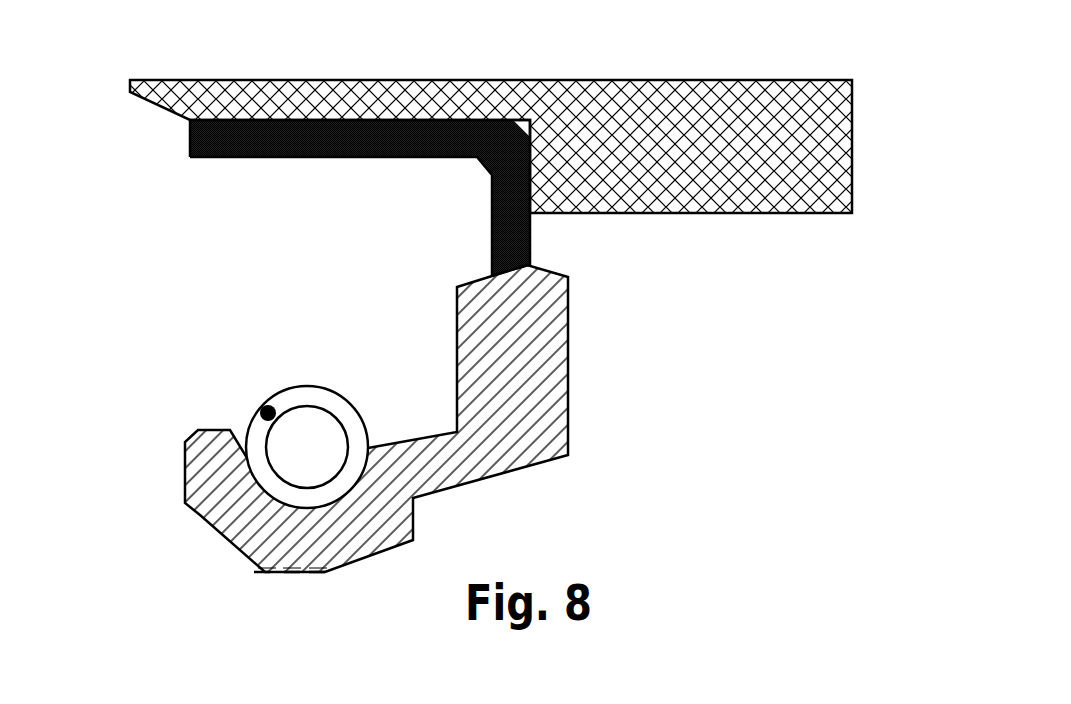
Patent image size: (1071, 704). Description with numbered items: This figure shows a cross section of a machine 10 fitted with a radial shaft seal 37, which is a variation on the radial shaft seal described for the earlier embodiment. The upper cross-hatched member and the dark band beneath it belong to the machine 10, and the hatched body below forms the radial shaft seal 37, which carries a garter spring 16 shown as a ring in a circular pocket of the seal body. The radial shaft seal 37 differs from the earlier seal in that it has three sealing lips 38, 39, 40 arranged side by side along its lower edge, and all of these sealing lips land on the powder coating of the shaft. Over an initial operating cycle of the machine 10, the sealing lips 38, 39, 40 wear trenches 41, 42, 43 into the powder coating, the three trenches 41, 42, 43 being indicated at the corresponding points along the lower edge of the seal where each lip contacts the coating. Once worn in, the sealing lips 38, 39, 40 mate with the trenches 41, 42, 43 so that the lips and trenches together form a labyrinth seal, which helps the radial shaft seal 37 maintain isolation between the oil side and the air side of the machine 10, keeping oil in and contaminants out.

The machine 10 is at (795, 63).
The garter spring 16 is at (280, 402).
The radial shaft seal 37 is at (120, 410).
The sealing lip 38 is at (318, 566).
The sealing lip 39 is at (292, 566).
The sealing lip 40 is at (268, 566).
The trench 41 is at (262, 572).
The trench 42 is at (292, 572).
The trench 43 is at (317, 572).